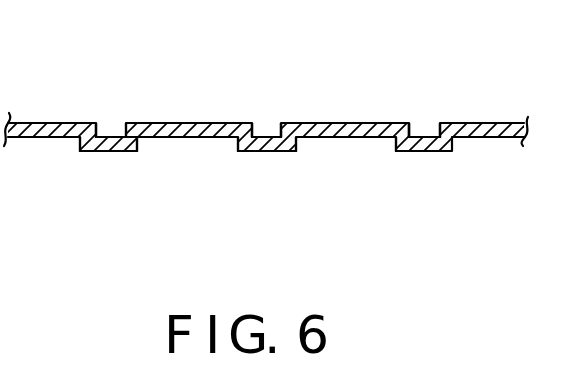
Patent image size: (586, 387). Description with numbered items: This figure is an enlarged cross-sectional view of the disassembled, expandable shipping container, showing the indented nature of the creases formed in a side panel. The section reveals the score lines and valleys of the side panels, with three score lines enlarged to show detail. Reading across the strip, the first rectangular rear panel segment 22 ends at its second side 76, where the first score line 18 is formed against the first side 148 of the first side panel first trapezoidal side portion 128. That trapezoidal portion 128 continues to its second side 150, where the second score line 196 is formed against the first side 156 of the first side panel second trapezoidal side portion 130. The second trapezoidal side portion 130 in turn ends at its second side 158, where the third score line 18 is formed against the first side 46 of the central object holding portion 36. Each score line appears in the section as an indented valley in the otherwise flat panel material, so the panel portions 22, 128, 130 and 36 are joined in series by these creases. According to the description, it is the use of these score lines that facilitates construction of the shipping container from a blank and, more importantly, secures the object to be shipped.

The first rectangular rear panel segment 22 is at (46, 123).
The score line 18 is at (117, 145).
The first side panel first trapezoidal side portion 128 is at (187, 123).
The second score line 196 is at (268, 128).
The first side panel second trapezoidal side portion 130 is at (357, 123).
The first side of the central object holding portion 46 is at (418, 133).
The central object holding portion 36 is at (500, 123).
The second side of the first rectangular rear panel segment 76 is at (99, 143).
The first side of the first side panel first trapezoidal side portion 148 is at (117, 145).
The second side of the first side panel first trapezoidal side portion 150 is at (260, 126).
The first side of the first side panel second trapezoidal side portion 156 is at (283, 126).
The second side of the first side panel second trapezoidal side portion 158 is at (420, 138).